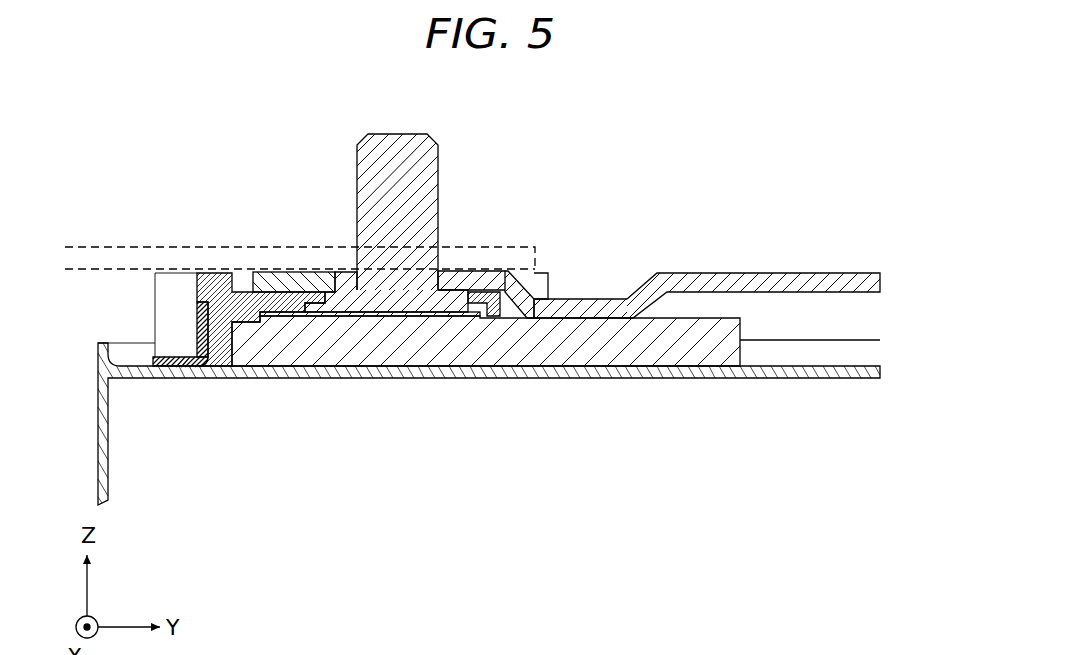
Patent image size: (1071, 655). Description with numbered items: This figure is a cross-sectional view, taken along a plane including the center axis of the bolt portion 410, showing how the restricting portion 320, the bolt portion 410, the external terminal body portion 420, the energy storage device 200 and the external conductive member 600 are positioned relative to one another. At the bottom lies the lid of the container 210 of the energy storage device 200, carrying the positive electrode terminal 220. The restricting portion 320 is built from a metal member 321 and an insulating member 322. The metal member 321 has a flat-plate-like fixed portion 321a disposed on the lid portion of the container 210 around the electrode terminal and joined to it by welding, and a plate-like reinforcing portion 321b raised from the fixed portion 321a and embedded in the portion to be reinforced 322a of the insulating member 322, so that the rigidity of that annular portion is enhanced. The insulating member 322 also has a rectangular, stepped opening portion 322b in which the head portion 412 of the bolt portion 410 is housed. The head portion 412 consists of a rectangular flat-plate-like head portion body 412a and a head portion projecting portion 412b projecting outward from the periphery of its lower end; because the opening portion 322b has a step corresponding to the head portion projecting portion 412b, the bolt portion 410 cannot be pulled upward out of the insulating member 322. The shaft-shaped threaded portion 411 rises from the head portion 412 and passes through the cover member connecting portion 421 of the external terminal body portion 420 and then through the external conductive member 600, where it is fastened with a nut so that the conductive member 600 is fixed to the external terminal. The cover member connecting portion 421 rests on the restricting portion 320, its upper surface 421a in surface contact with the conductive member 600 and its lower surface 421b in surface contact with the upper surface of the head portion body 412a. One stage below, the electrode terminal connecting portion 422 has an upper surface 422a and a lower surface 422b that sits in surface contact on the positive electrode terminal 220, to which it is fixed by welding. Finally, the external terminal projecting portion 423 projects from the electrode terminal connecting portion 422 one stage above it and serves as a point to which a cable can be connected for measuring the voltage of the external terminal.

The energy storage device 200 is at (469, 476).
The container 210 is at (215, 372).
The positive electrode terminal 220 is at (540, 352).
The restricting portion 320 is at (157, 100).
The metal member 321 is at (94, 280).
The fixed portion 321a is at (176, 368).
The reinforcing portion 321b is at (195, 330).
The insulating member 322 is at (188, 180).
The portion to be reinforced 322a is at (220, 287).
The opening portion 322b is at (295, 282).
The bolt portion 410 is at (463, 140).
The threaded portion 411 is at (440, 180).
The head portion 412 is at (323, 195).
The head portion body 412a is at (345, 295).
The head portion projecting portion 412b is at (318, 316).
The external terminal body portion 420 is at (690, 238).
The cover member connecting portion 421 is at (490, 272).
The upper surface 421a is at (450, 272).
The lower surface 421b is at (457, 291).
The electrode terminal connecting portion 422 is at (610, 300).
The upper surface 422a is at (558, 293).
The lower surface 422b is at (600, 320).
The external terminal projecting portion 423 is at (712, 275).
The external conductive member 600 is at (147, 257).